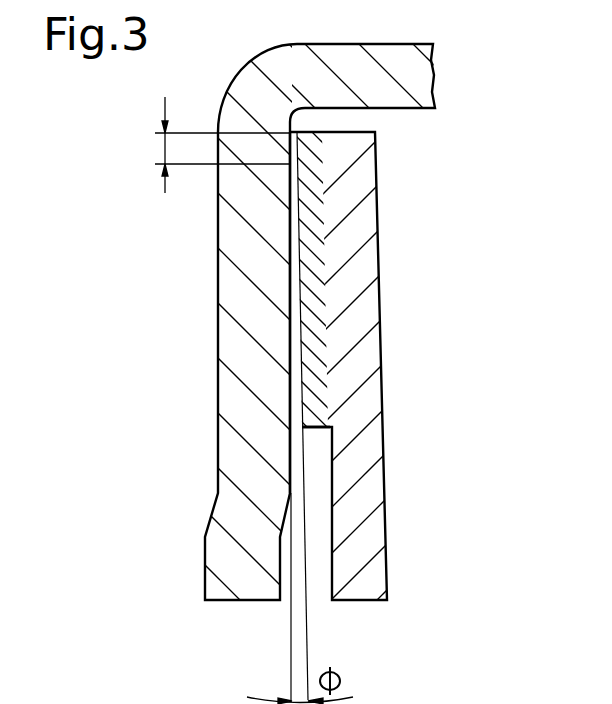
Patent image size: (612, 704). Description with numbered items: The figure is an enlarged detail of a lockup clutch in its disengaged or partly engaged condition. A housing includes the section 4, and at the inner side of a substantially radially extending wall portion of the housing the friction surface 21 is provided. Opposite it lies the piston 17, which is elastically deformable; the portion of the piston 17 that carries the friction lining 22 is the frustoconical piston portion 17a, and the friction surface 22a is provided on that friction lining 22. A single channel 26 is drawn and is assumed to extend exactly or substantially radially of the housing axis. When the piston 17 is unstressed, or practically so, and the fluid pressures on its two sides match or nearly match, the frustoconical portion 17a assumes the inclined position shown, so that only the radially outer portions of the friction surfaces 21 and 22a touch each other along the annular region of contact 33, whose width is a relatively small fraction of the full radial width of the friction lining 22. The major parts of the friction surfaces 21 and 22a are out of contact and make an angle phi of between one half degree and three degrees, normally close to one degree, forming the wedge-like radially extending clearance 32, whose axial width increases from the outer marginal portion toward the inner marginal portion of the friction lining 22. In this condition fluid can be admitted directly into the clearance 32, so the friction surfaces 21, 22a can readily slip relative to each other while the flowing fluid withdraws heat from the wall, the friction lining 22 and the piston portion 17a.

The section 4 is at (243, 488).
The piston 17 is at (368, 577).
The frustoconical piston portion 17a is at (360, 278).
The friction surface 21 is at (288, 290).
The friction lining 22 is at (320, 408).
The friction surface 22a is at (297, 385).
The channel 26 is at (303, 323).
The clearance 32 is at (295, 340).
The region of contact 33 is at (163, 147).